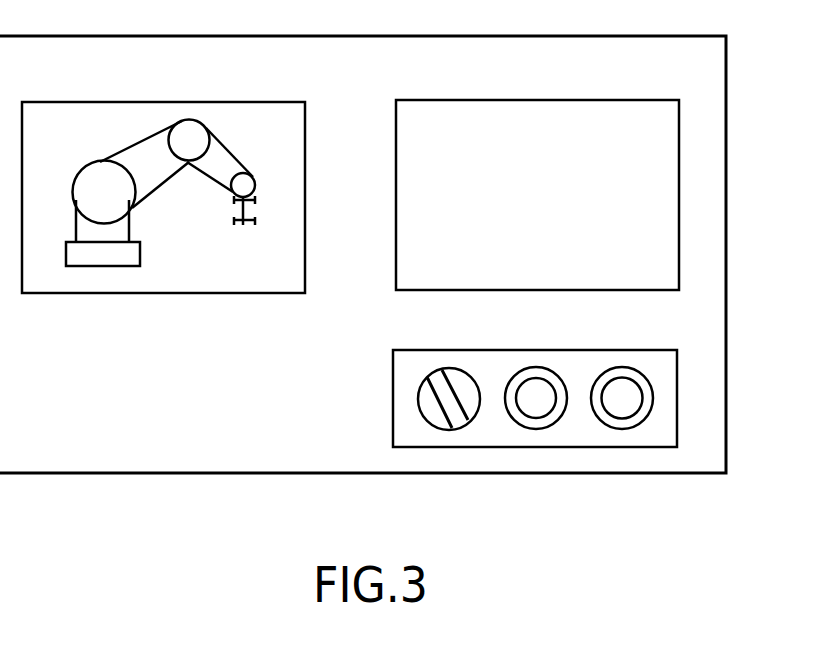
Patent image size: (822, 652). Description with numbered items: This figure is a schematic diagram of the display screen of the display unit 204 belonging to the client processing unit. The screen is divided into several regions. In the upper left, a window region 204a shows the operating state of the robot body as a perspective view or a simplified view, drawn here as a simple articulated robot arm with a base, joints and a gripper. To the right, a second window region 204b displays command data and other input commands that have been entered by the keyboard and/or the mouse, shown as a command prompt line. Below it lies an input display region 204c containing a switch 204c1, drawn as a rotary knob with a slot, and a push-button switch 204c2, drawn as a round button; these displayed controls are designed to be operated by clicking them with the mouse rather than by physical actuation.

The display unit 204 is at (654, 36).
The window region 204a is at (272, 83).
The window region 204b is at (677, 82).
The input display region 204c is at (479, 373).
The switch 204c1 is at (455, 382).
The push-button switch 204c2 is at (547, 375).